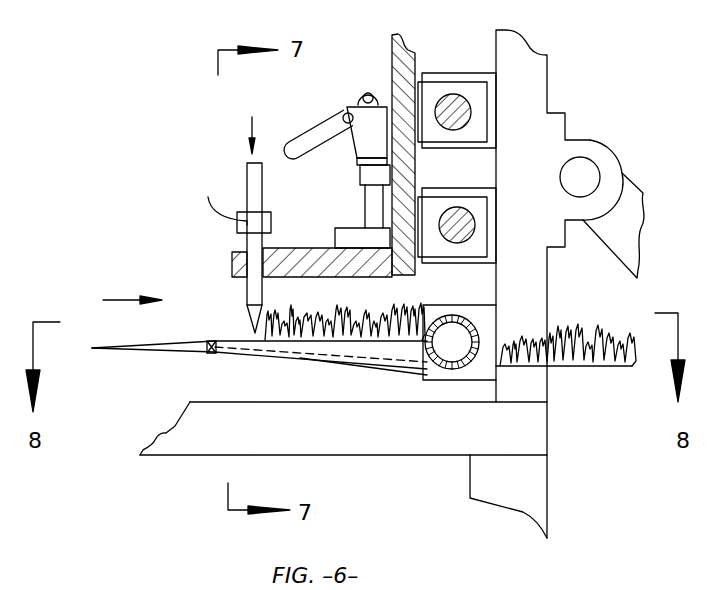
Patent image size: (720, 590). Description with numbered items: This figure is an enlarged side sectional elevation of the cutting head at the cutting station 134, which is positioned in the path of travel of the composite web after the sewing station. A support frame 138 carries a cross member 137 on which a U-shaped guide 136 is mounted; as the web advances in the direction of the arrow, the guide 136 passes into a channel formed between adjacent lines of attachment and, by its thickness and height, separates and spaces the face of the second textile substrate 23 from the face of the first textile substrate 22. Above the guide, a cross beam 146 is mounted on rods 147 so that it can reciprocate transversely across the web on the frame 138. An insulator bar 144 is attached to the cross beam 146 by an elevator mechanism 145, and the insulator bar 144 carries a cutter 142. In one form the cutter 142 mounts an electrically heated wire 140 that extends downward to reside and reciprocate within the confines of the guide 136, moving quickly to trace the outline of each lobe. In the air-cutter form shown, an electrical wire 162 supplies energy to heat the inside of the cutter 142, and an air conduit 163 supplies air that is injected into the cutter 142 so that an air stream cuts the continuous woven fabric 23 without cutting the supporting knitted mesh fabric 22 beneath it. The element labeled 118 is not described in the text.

The first textile substrate 22 is at (200, 353).
The second textile substrate 23 is at (200, 342).
The carpet / fabric pile 118 is at (560, 345).
The cutting station 134 is at (630, 100).
The U-shaped guide 136 is at (404, 334).
The cross member 137 is at (450, 314).
The support frame 138 is at (538, 100).
The electrically heated wire 140 is at (247, 320).
The cutter 142 is at (240, 279).
The insulator bar 144 is at (328, 250).
The elevator mechanism 145 is at (345, 112).
The cross beam 146 is at (412, 60).
The rod 147 is at (447, 96).
The electrical wire 162 is at (215, 206).
The air conduit 163 is at (245, 172).